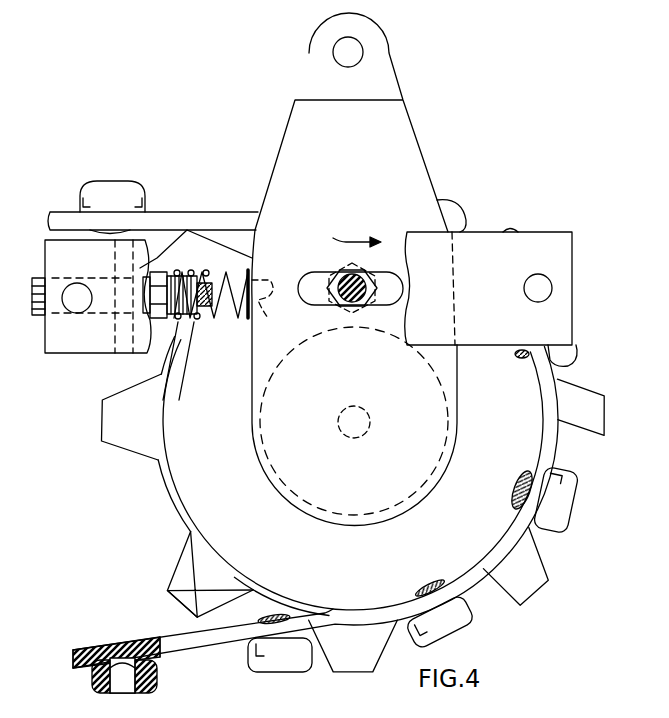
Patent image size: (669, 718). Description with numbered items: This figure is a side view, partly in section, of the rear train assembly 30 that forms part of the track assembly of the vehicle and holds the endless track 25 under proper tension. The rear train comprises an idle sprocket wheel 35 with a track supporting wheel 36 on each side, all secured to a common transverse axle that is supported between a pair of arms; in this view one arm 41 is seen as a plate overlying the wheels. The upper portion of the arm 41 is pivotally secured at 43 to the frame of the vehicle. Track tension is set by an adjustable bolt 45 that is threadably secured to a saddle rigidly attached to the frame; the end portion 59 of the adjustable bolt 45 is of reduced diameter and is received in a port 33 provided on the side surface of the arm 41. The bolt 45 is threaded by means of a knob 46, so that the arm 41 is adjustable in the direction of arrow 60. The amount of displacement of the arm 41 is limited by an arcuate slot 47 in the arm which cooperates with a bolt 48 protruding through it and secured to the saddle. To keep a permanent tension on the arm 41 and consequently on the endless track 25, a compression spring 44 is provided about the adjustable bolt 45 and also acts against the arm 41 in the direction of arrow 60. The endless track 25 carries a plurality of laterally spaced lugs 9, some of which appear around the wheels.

The lugs 9 is at (290, 662).
The endless track 25 is at (216, 645).
The rear train assembly 30 is at (128, 539).
The port 33 is at (219, 315).
The idle sprocket wheel 35 is at (105, 433).
The track supporting wheel 36 is at (200, 520).
The arm 41 is at (404, 115).
The pivot 43 is at (353, 52).
The compression spring 44 is at (223, 272).
The adjustable bolt 45 is at (187, 311).
The knob 46 is at (36, 283).
The arcuate slot 47 is at (393, 302).
The bolt 48 is at (358, 280).
The end portion 59 is at (216, 308).
The arrow 60 is at (354, 230).